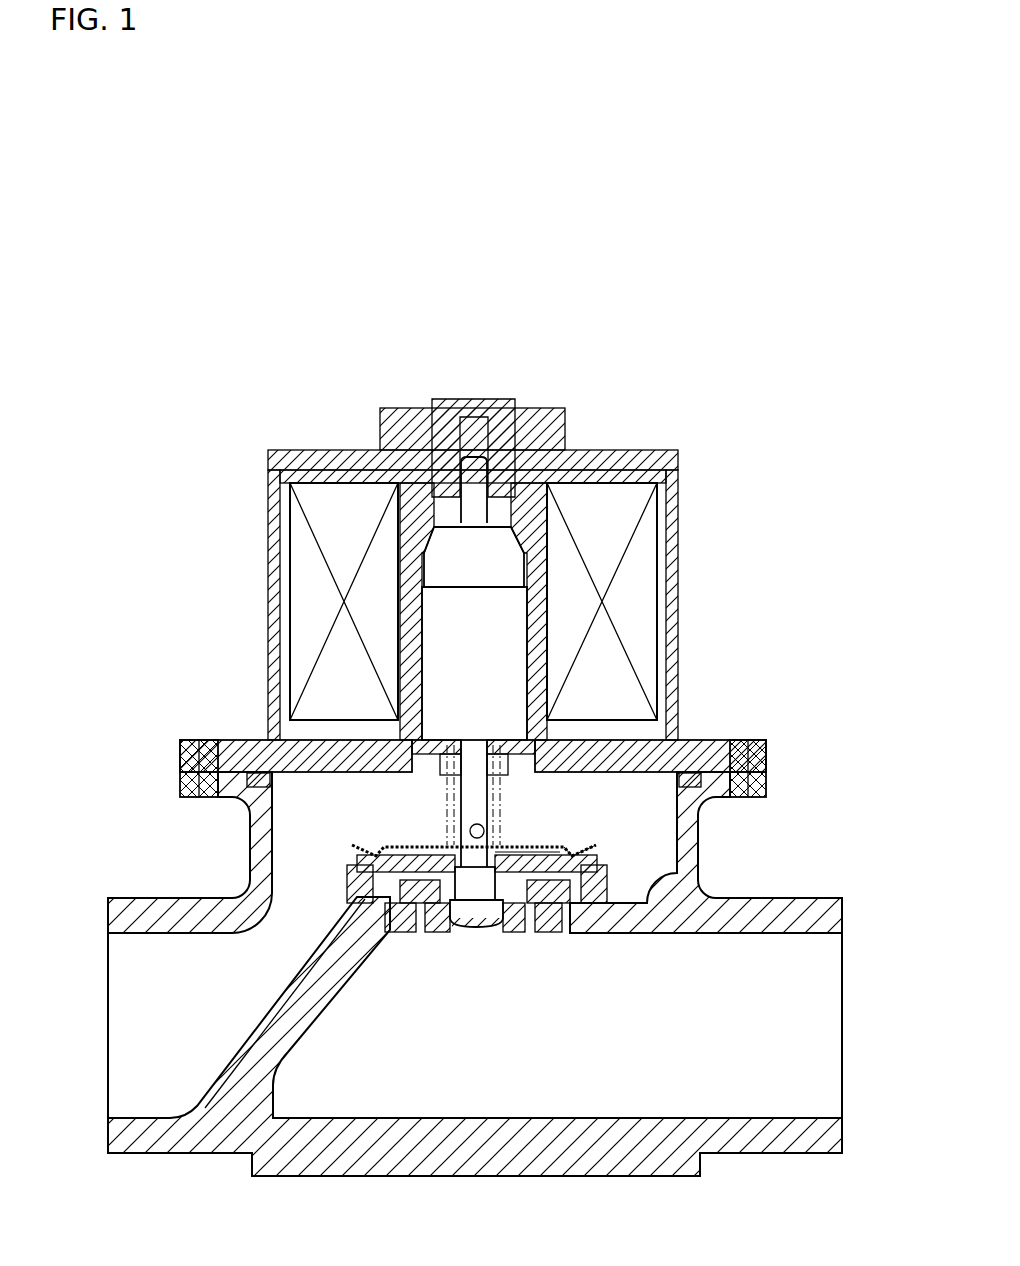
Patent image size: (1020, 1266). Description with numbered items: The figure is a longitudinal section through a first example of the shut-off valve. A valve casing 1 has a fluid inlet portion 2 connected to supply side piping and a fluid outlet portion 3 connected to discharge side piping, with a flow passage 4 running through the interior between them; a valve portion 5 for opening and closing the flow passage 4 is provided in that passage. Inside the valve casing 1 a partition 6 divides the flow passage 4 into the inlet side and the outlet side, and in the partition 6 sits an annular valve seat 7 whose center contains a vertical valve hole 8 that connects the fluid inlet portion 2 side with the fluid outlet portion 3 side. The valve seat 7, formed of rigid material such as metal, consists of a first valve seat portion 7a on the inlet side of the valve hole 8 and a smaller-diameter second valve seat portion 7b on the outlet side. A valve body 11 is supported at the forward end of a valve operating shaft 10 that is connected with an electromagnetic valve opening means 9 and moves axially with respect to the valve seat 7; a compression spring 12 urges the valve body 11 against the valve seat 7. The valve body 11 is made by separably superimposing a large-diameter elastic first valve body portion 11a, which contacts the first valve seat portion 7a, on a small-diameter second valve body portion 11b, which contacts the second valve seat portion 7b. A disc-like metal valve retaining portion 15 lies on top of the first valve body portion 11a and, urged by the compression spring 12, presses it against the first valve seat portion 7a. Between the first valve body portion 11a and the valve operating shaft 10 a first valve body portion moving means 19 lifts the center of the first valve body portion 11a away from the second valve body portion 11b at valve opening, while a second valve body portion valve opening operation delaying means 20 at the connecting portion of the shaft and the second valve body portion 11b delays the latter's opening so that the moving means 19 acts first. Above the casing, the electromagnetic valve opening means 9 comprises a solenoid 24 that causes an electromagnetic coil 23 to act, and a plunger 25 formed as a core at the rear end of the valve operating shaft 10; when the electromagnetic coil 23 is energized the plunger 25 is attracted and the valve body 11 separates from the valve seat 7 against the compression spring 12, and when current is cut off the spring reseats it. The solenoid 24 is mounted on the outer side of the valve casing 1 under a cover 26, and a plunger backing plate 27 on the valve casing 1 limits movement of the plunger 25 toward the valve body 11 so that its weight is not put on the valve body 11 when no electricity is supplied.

The valve casing 1 is at (162, 892).
The fluid inlet portion 2 is at (135, 1020).
The fluid outlet portion 3 is at (800, 1045).
The flow passage 4 is at (203, 1043).
The valve portion 5 is at (343, 842).
The partition 6 is at (287, 1032).
The valve seat 7 is at (343, 883).
The first valve seat portion 7a is at (607, 875).
The second valve seat portion 7b is at (552, 930).
The valve hole 8 is at (420, 932).
The electromagnetic valve opening means 9 is at (700, 527).
The valve operating shaft 10 is at (470, 775).
The valve body 11 is at (392, 842).
The first valve body portion 11a is at (568, 857).
The second valve body portion 11b is at (438, 920).
The compression spring 12 is at (445, 792).
The valve retaining portion 15 is at (510, 847).
The first valve body portion moving means 19 is at (477, 863).
The second valve body portion valve opening operation delaying means 20 is at (483, 933).
The electromagnetic coil 23 is at (632, 587).
The solenoid 24 is at (538, 640).
The plunger 25 is at (442, 623).
The cover 26 is at (670, 488).
The plunger backing plate 27 is at (510, 748).